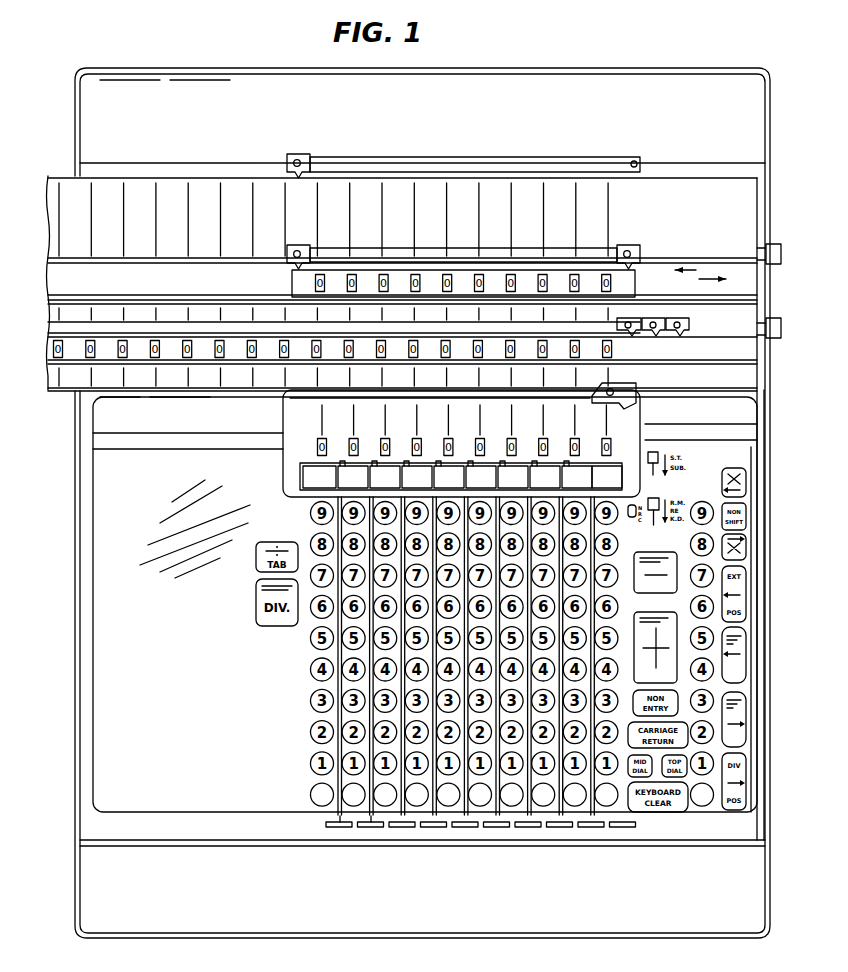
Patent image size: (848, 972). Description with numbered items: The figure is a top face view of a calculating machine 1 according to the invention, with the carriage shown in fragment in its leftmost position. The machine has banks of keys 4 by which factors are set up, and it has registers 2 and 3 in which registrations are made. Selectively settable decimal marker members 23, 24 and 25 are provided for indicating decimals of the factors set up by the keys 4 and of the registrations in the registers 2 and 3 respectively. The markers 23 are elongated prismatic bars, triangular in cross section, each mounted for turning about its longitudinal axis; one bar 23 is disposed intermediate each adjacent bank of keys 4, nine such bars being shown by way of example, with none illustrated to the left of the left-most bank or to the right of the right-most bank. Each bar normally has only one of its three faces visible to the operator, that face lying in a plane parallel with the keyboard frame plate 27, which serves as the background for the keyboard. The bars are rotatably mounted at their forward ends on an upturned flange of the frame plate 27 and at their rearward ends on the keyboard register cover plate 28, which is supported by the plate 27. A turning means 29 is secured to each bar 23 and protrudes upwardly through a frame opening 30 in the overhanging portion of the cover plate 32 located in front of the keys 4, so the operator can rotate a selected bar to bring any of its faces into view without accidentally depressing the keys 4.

The calculating machine 1 is at (742, 191).
The register 2 is at (644, 266).
The register 3 is at (46, 332).
The keys 4 is at (310, 764).
The decimal marker members 23 is at (368, 663).
The decimal marker member 24 is at (298, 251).
The decimal marker member 25 is at (674, 337).
The keyboard frame plate 27 is at (208, 713).
The keyboard register cover plate 28 is at (295, 458).
The turning means 29 is at (337, 828).
The frame openings 30 is at (326, 825).
The cover plate 32 is at (475, 125).